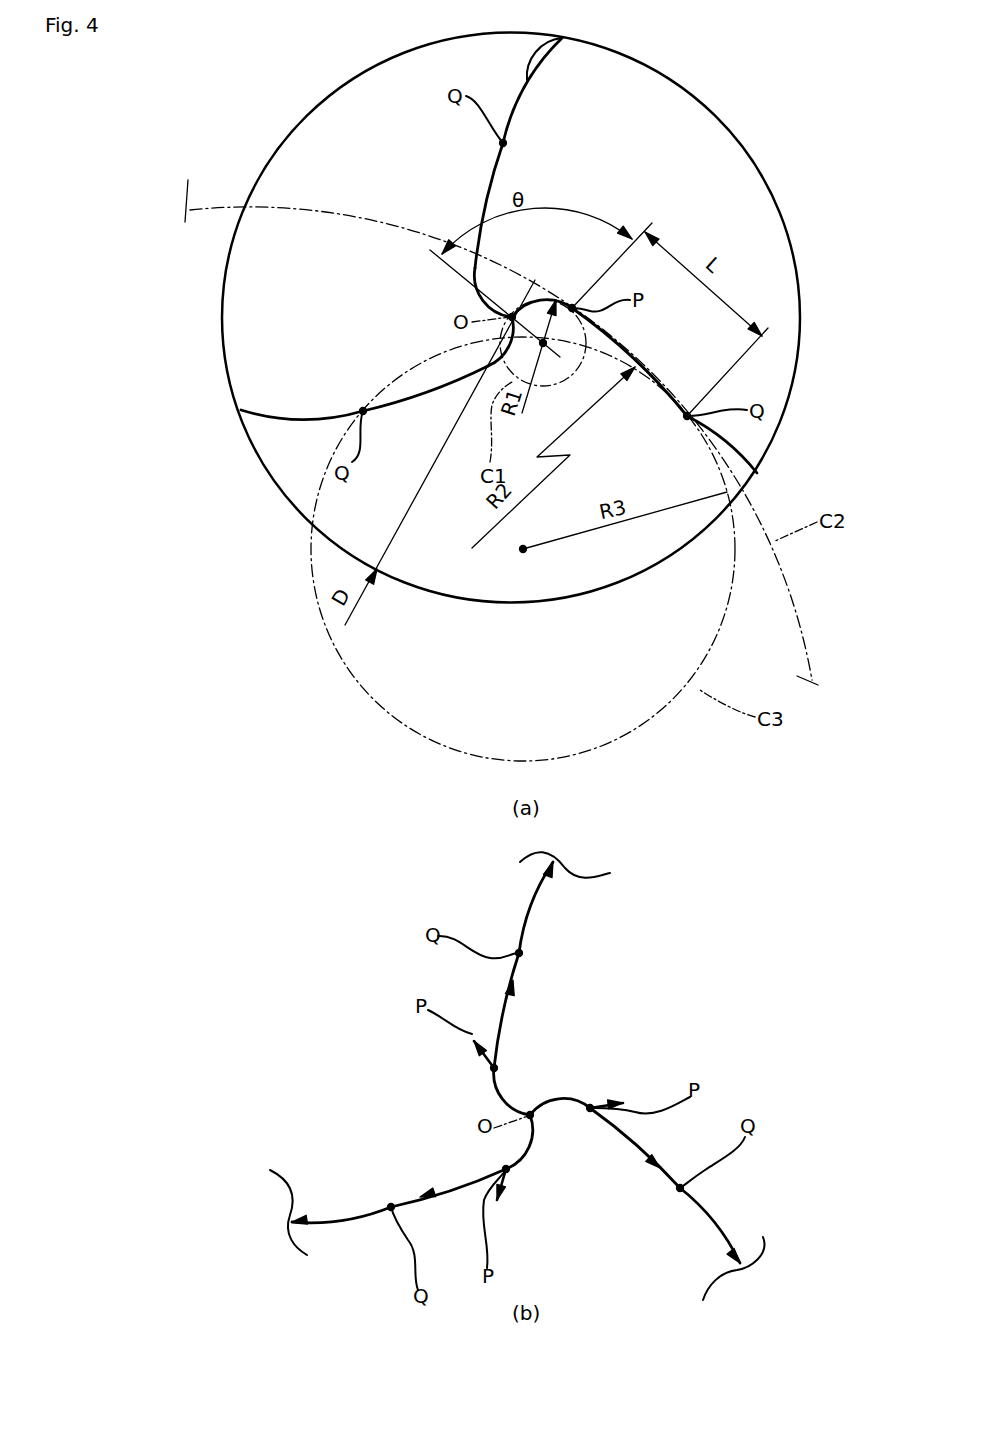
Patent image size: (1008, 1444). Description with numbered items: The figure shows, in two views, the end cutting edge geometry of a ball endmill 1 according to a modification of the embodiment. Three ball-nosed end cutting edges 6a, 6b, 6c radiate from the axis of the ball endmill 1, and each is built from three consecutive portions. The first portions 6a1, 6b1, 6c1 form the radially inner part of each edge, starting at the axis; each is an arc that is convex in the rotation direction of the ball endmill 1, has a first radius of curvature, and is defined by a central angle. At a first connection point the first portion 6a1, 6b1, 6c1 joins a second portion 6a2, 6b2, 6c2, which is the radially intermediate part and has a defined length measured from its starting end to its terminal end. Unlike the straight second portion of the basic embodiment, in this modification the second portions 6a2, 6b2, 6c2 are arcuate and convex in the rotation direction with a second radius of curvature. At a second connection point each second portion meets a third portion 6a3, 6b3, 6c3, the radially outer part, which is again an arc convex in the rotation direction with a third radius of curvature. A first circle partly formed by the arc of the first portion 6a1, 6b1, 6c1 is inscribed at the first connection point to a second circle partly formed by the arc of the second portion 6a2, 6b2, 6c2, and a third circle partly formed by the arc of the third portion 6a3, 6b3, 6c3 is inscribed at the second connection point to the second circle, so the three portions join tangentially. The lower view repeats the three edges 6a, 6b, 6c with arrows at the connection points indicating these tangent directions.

The ball endmill 1 is at (798, 160).
The ball-nosed end cutting edge 6a is at (703, 800).
The first portion 6a1 is at (586, 323).
The second portion 6a2 is at (632, 358).
The third portion 6a3 is at (733, 482).
The ball-nosed end cutting edge 6b is at (378, 762).
The first portion 6b1 is at (493, 355).
The second portion 6b2 is at (403, 400).
The third portion 6b3 is at (297, 422).
The ball-nosed end cutting edge 6c is at (569, 576).
The first portion 6c1 is at (490, 313).
The second portion 6c2 is at (493, 185).
The third portion 6c3 is at (565, 45).